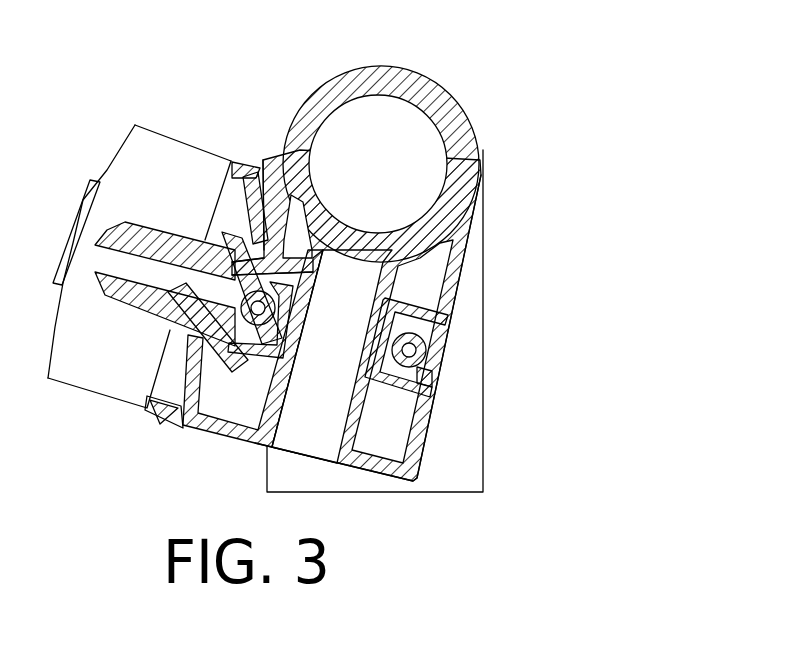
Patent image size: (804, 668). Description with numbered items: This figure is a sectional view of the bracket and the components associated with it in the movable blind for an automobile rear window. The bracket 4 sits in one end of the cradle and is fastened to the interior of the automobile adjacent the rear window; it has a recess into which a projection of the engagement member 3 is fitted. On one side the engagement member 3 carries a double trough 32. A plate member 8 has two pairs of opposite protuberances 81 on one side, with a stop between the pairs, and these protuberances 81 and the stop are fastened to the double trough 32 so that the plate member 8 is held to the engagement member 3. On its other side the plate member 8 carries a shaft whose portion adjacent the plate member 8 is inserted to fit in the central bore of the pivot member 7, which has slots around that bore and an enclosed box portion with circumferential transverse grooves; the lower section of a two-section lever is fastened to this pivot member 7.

The engagement member 3 is at (447, 94).
The double trough 32 is at (259, 170).
The bracket 4 is at (466, 372).
The pivot member 7 is at (94, 372).
The plate member 8 is at (166, 384).
The protuberance 81 is at (210, 426).